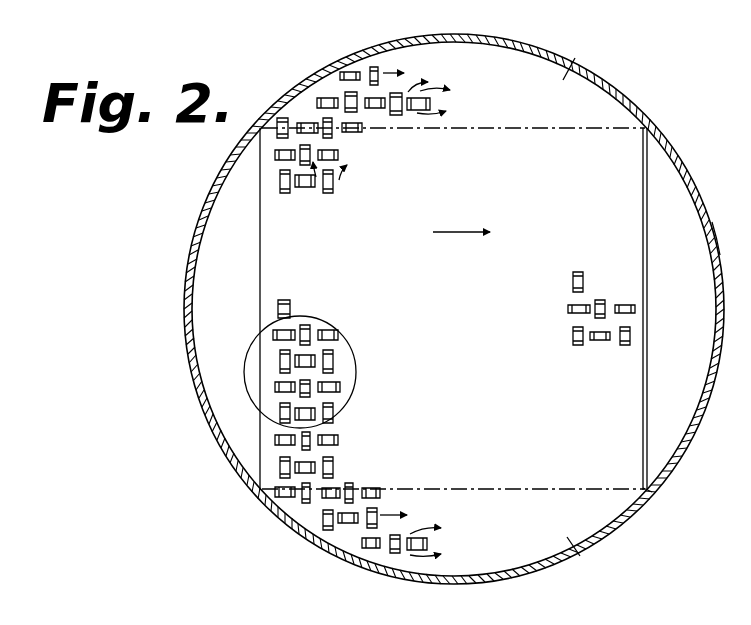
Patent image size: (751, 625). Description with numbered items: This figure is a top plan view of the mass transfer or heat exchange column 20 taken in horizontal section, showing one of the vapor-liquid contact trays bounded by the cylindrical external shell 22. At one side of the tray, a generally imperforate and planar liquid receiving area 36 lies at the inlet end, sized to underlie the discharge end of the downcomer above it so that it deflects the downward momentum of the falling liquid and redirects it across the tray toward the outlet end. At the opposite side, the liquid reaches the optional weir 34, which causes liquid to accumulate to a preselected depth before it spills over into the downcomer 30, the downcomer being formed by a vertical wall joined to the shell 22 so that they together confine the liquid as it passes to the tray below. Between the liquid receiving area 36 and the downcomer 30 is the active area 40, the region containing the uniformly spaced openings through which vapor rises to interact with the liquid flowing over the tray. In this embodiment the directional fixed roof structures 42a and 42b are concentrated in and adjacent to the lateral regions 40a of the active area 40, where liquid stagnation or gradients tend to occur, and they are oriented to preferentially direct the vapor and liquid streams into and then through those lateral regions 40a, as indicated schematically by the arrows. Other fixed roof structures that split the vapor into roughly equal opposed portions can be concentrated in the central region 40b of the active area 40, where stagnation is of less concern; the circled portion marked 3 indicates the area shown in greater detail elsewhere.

The mass transfer or heat exchange column 20 is at (683, 152).
The cylindrical external shell 22 is at (708, 227).
The downcomer 30 is at (692, 336).
The weir 34 is at (648, 268).
The liquid receiving area 36 is at (234, 314).
The active area 40 is at (468, 337).
The lateral regions of active area 40a is at (595, 306).
The central region of active area 40b is at (652, 490).
The directional fixed roof structure 42a is at (370, 66).
The directional fixed roof structure 42b is at (316, 97).
The detail region of FIG. 3 is at (356, 372).